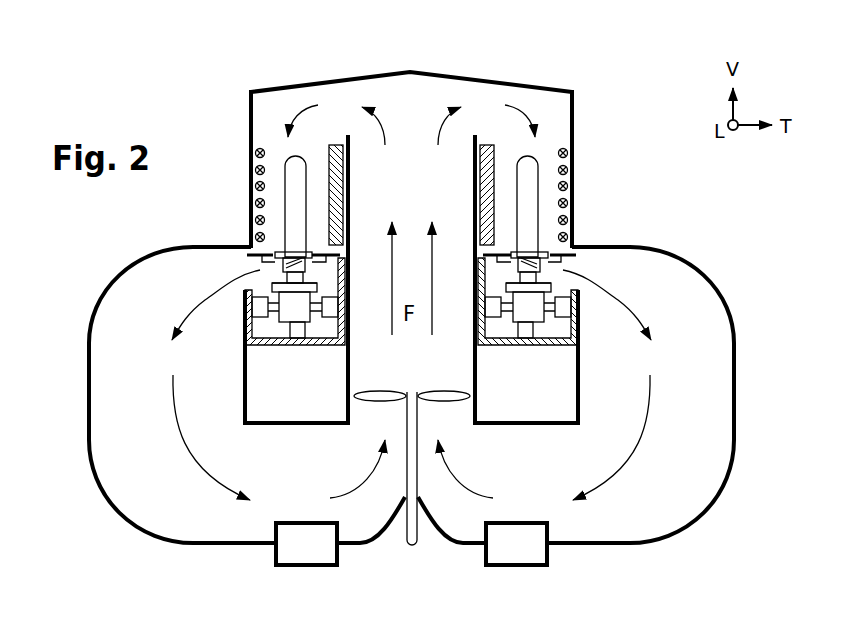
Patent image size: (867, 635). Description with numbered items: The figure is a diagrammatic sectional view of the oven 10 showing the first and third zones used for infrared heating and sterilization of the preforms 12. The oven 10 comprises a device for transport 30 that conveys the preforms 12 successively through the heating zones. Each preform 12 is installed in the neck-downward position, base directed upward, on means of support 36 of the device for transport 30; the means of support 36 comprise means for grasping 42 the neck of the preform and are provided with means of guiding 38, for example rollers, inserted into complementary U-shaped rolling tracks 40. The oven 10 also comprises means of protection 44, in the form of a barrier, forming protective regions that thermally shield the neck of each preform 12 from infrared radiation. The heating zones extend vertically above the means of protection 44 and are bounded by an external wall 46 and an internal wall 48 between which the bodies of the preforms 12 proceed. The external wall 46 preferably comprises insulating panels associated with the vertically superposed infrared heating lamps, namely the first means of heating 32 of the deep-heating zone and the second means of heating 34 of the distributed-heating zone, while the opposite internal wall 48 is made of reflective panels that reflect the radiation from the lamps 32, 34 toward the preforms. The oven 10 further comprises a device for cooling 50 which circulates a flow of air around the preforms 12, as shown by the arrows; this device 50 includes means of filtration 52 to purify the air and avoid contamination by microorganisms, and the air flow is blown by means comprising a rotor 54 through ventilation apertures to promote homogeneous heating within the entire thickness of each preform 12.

The oven 10 is at (410, 133).
The preform 12 is at (298, 162).
The device for transport 30 is at (584, 340).
The first means of heating 32 is at (578, 163).
The second means of heating 34 is at (247, 155).
The means of support 36 is at (288, 318).
The means of guiding 38 is at (330, 310).
The U-shaped rolling tracks 40 is at (275, 340).
The means for grasping 42 is at (275, 286).
The means of protection 44 is at (258, 257).
The external wall 46 is at (252, 213).
The internal wall 48 is at (493, 178).
The device for cooling 50 is at (668, 490).
The means of filtration 52 is at (325, 557).
The rotor 54 is at (413, 481).